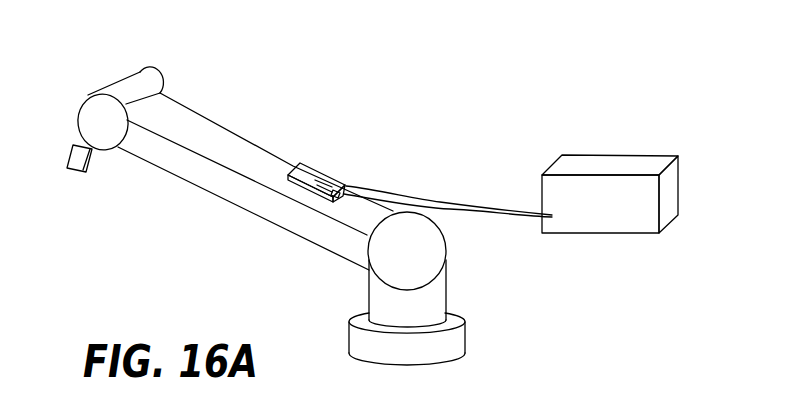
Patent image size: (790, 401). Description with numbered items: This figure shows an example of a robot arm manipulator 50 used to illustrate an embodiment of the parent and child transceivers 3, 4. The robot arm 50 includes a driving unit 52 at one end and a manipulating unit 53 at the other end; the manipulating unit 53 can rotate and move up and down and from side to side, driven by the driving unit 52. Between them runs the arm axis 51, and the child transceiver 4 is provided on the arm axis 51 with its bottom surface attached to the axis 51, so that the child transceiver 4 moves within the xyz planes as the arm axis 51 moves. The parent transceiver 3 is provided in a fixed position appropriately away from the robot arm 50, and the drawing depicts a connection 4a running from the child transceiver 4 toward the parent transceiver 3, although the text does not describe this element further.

The parent transceiver 3 is at (678, 180).
The child transceiver 4 is at (307, 170).
The cable 4a is at (328, 180).
The robot arm manipulator 50 is at (280, 105).
The arm axis 51 is at (202, 120).
The driving unit 52 is at (440, 285).
The manipulating unit 53 is at (102, 110).